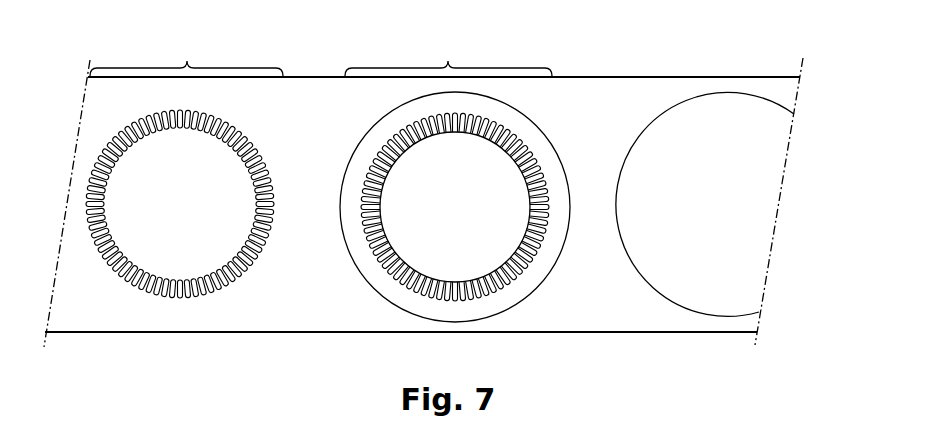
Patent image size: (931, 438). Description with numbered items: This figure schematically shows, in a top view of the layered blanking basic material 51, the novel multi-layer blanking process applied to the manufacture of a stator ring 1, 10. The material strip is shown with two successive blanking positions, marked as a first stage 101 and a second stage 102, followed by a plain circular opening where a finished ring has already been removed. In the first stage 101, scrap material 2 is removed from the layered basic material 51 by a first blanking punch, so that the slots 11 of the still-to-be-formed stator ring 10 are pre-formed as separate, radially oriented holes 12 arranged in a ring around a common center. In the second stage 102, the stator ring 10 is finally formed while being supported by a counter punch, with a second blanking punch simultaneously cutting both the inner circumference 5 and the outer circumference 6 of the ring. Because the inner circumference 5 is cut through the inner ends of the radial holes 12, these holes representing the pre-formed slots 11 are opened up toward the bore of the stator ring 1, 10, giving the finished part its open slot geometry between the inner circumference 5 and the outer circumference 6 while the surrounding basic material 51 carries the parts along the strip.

The layered blanking basic material 51 is at (88, 318).
The first stage 101 is at (177, 197).
The second stage 102 is at (455, 197).
The scrap material 2 is at (177, 231).
The radially oriented holes 12 is at (170, 289).
The stator ring 1 is at (455, 229).
The stator ring 10 is at (425, 307).
The inner circumference 5 is at (495, 272).
The outer circumference 6 is at (507, 311).
The slots 11 is at (466, 286).